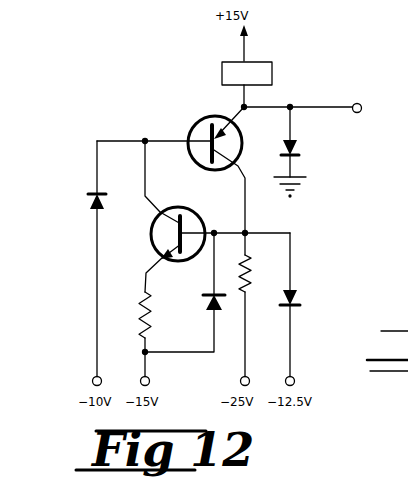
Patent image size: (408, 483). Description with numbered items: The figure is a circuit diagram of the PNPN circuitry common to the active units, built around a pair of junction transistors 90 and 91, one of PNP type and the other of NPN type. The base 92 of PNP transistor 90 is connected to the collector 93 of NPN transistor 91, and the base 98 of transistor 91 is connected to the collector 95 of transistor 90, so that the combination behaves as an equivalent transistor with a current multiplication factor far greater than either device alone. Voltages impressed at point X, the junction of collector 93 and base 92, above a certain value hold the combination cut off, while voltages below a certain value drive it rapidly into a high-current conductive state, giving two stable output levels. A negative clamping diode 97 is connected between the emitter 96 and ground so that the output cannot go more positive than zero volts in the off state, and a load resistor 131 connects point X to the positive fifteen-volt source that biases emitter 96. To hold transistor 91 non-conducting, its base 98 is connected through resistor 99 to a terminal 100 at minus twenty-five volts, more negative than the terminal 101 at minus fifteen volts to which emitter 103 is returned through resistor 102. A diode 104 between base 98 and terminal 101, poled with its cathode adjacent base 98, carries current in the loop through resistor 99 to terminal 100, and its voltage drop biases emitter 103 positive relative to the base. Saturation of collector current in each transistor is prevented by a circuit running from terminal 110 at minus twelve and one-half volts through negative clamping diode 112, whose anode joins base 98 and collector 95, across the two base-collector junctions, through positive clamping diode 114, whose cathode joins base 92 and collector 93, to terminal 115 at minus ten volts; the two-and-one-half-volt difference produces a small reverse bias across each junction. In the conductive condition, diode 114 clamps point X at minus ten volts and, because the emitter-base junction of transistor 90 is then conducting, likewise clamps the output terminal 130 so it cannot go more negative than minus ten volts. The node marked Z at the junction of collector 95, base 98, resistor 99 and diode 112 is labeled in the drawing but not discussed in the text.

The PNP junction transistor 90 is at (178, 129).
The NPN junction transistor 91 is at (248, 208).
The base of PNP transistor 92 is at (189, 125).
The collector of NPN transistor 93 is at (172, 207).
The collector of PNP transistor 95 is at (227, 160).
The emitter of PNP transistor 96 is at (234, 131).
The negative clamping diode 97 is at (294, 140).
The base of NPN transistor 98 is at (240, 204).
The resistor 99 is at (258, 272).
The terminal 100 is at (248, 377).
The terminal 101 is at (148, 377).
The resistor 102 is at (141, 325).
The emitter of NPN transistor 103 is at (168, 258).
The diode 104 is at (222, 312).
The terminal 110 is at (294, 377).
The negative clamping diode 112 is at (297, 287).
The positive clamping diode 114 is at (94, 208).
The terminal 115 is at (99, 377).
The output terminal 130 is at (355, 103).
The load resistor 131 is at (264, 62).
The point X is at (143, 138).
The node Z is at (248, 233).